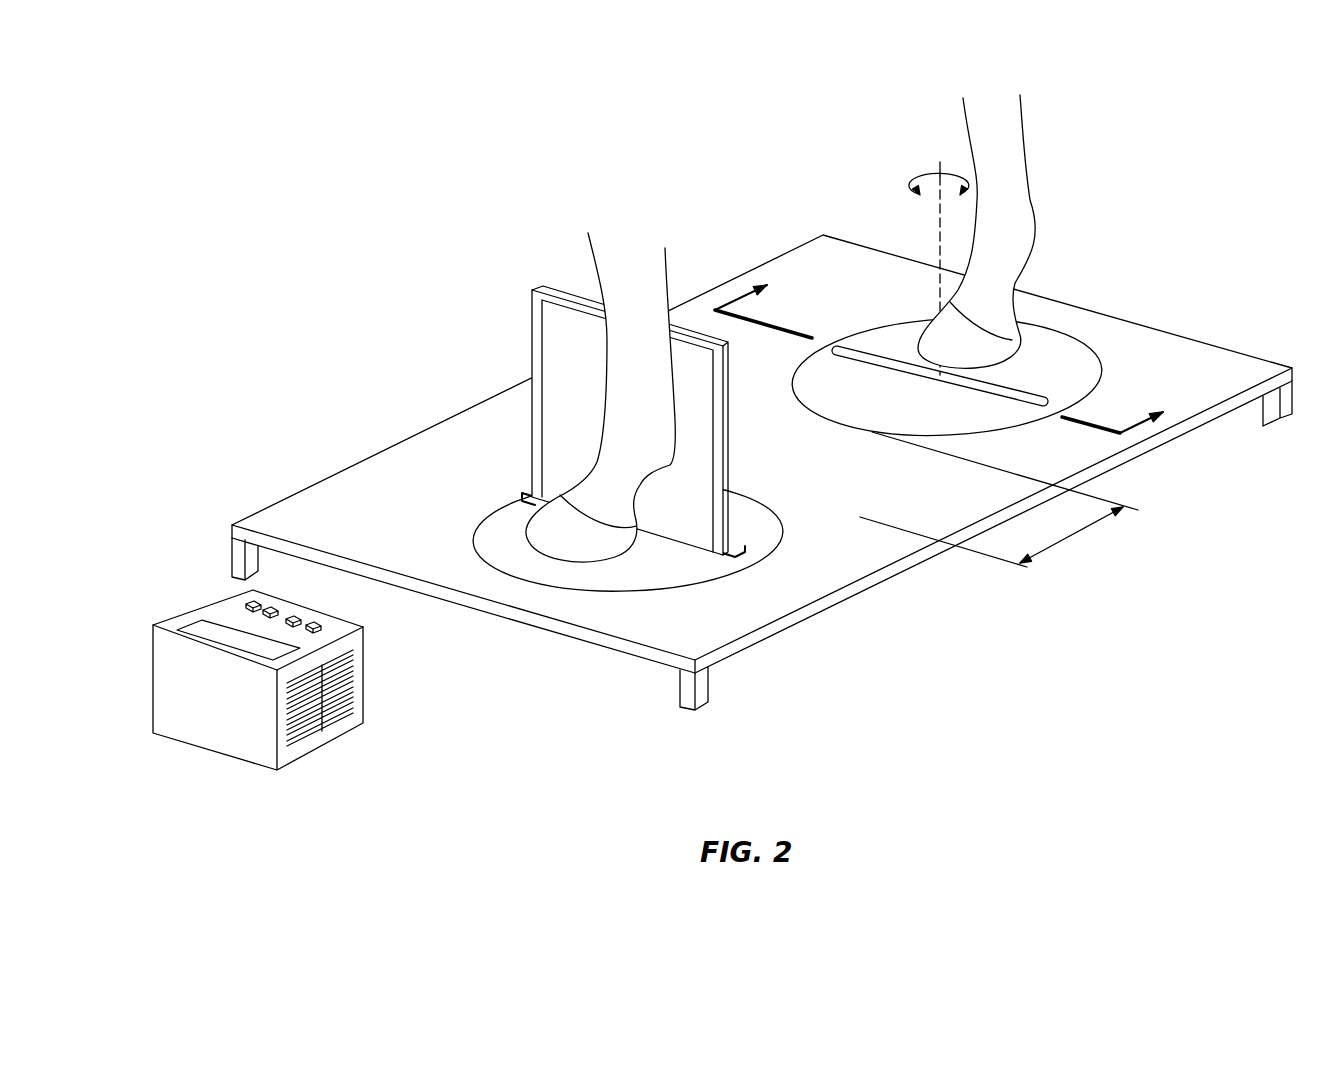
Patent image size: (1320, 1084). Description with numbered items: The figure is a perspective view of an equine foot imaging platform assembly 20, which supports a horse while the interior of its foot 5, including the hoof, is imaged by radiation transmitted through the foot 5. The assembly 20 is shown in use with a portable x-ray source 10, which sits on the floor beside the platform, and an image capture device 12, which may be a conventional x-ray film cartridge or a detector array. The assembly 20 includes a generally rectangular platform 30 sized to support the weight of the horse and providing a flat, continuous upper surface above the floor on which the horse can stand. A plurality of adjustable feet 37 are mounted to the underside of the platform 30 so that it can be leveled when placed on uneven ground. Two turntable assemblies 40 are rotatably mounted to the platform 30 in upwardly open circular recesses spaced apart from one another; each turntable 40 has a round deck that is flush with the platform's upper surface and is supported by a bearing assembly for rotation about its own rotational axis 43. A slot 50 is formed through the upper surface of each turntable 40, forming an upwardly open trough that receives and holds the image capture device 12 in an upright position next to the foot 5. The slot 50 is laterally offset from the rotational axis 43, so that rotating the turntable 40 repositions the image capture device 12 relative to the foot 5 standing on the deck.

The imaging platform assembly 20 is at (371, 352).
The portable x-ray source 10 is at (227, 612).
The image capture device 12 is at (568, 335).
The foot 5 is at (550, 537).
The platform 30 is at (1155, 353).
The adjustable feet 37 is at (687, 688).
The turntable assembly 40 is at (863, 325).
The rotational axis 43 is at (940, 235).
The slot 50 is at (1030, 388).